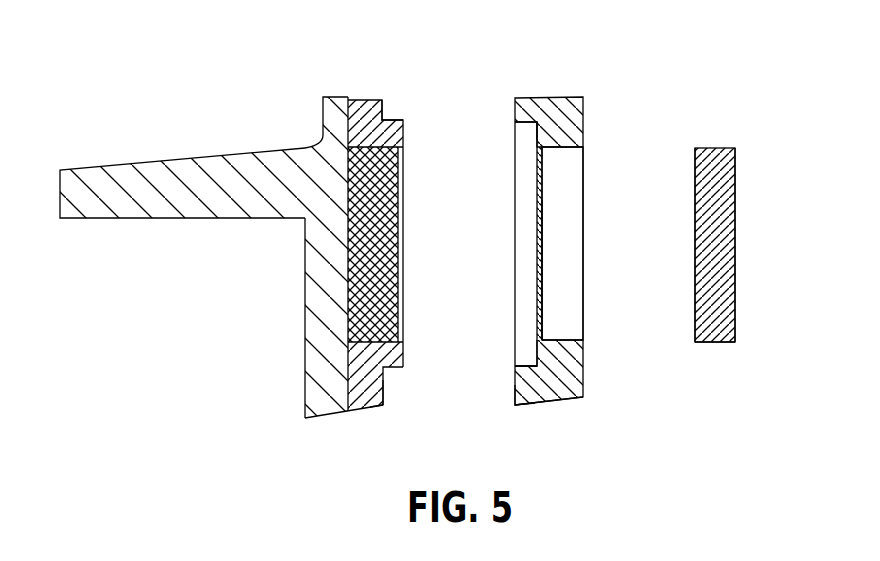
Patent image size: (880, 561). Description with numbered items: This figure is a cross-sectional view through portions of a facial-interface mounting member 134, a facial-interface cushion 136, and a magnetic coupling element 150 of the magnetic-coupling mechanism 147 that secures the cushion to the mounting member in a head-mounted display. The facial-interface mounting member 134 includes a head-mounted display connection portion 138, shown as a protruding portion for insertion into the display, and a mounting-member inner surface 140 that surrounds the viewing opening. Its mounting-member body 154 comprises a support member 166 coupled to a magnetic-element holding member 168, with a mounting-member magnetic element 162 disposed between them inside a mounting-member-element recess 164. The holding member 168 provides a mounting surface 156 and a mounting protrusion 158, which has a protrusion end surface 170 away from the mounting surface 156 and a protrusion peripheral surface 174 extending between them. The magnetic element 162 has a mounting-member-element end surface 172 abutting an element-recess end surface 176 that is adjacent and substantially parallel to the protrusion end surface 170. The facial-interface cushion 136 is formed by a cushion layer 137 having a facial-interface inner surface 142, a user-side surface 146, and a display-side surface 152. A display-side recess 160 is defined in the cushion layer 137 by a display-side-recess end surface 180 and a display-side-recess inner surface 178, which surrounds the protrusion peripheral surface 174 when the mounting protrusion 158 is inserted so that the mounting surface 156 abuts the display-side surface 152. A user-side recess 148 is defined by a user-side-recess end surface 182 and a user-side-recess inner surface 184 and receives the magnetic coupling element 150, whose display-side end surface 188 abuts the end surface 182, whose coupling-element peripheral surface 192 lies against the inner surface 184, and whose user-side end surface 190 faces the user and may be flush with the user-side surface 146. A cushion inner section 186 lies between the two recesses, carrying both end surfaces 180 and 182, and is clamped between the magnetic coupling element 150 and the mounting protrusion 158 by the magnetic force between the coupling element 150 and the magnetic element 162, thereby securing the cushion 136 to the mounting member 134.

The facial-interface mounting member 134 is at (220, 95).
The facial-interface cushion 136 is at (578, 72).
The cushion layer 137 is at (550, 112).
The head-mounted display connection portion 138 is at (165, 178).
The mounting-member inner surface 140 is at (341, 413).
The facial-interface inner surface 142 is at (551, 401).
The user-side surface 146 is at (583, 380).
The magnetic-coupling mechanism 147 is at (720, 410).
The user-side recess 148 is at (587, 174).
The magnetic coupling element 150 is at (739, 138).
The display-side surface 152 is at (516, 390).
The mounting-member body 154 is at (330, 122).
The mounting surface 156 is at (385, 402).
The mounting protrusion 158 is at (387, 128).
The display-side recess 160 is at (515, 141).
The mounting-member magnetic element 162 is at (350, 268).
The mounting-member-element recess 164 is at (366, 130).
The support member 166 is at (315, 363).
The magnetic-element holding member 168 is at (368, 398).
The protrusion end surface 170 is at (402, 207).
The mounting-member-element end surface 172 is at (400, 283).
The protrusion peripheral surface 174 is at (396, 366).
The element-recess end surface 176 is at (399, 178).
The display-side-recess inner surface 178 is at (527, 365).
The display-side-recess end surface 180 is at (524, 252).
The user-side-recess end surface 182 is at (544, 268).
The user-side-recess inner surface 184 is at (572, 340).
The cushion inner section 186 is at (543, 216).
The display-side end surface 188 is at (695, 232).
The user-side end surface 190 is at (735, 227).
The coupling-element peripheral surface 192 is at (715, 345).